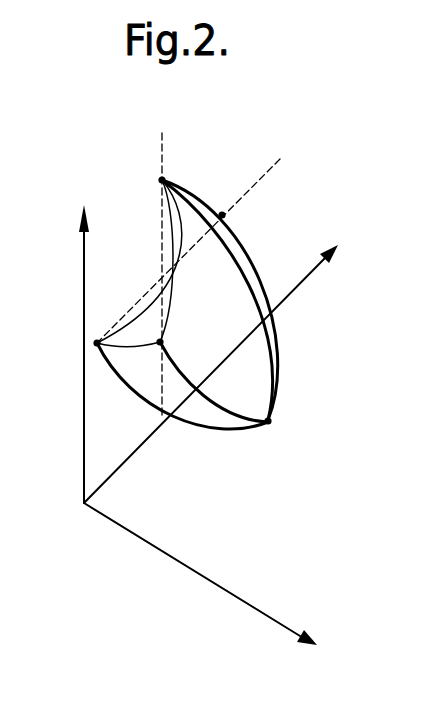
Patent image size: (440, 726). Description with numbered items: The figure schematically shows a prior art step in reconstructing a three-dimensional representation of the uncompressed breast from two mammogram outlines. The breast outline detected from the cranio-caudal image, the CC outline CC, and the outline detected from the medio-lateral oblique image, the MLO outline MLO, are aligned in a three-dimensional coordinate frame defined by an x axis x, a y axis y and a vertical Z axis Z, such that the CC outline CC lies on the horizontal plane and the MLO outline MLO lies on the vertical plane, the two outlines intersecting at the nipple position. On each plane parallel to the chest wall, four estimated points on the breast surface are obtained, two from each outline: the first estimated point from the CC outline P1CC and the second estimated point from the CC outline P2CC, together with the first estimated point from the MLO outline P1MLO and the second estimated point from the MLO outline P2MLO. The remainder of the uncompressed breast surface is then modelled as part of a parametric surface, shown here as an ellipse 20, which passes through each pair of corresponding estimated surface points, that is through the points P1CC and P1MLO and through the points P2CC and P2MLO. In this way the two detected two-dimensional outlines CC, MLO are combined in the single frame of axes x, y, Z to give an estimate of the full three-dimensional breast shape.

The ellipse 20 is at (200, 255).
The CC outline CC is at (279, 343).
The MLO outline MLO is at (276, 360).
The first estimated point from CC outline P1CC is at (56, 377).
The second estimated point from CC outline P2CC is at (225, 215).
The first estimated point from MLO outline P1MLO is at (163, 181).
The second estimated point from MLO outline P2MLO is at (160, 342).
The x axis x is at (316, 661).
The y axis y is at (230, 366).
The z axis Z is at (68, 351).